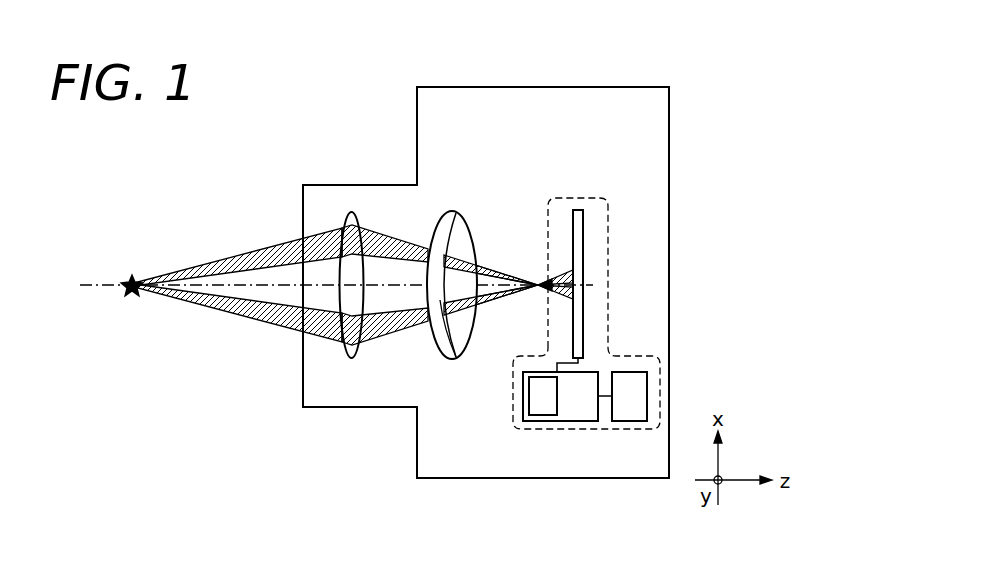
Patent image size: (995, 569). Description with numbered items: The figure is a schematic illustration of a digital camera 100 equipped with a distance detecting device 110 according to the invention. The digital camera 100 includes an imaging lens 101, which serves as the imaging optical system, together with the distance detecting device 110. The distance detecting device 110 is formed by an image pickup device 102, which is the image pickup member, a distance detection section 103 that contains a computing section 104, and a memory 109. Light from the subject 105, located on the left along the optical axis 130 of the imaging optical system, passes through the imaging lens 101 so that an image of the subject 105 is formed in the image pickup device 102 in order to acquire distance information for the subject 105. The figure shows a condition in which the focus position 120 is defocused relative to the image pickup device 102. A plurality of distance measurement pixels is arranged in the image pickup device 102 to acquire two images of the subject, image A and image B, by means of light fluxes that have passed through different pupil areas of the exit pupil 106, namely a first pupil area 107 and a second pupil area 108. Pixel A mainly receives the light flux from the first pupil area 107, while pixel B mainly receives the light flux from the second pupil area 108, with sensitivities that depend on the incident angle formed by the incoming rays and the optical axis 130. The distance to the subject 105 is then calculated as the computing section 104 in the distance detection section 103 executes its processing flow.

The digital camera 100 is at (667, 72).
The imaging lens 101 is at (353, 211).
The image pickup device 102 is at (578, 209).
The distance detection section 103 is at (583, 422).
The computing section 104 is at (537, 416).
The subject 105 is at (134, 276).
The exit pupil 106 is at (452, 211).
The first pupil area 107 is at (447, 256).
The second pupil area 108 is at (452, 347).
The memory 109 is at (635, 422).
The distance detecting device 110 is at (608, 228).
The focus position 120 is at (537, 288).
The optical axis 130 is at (242, 285).